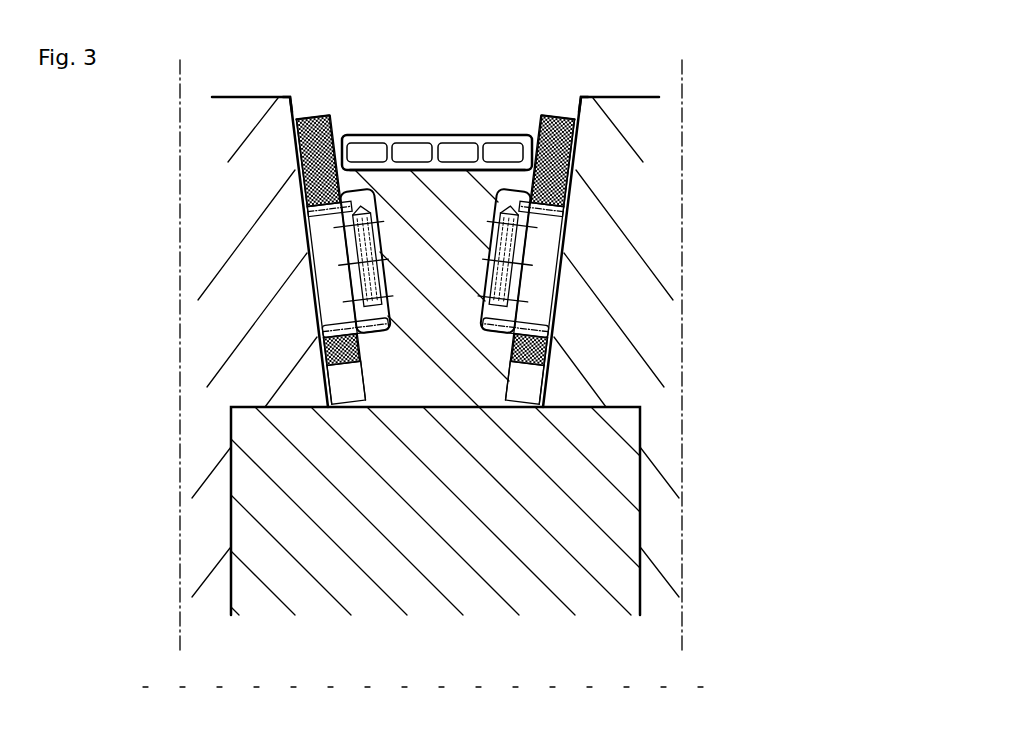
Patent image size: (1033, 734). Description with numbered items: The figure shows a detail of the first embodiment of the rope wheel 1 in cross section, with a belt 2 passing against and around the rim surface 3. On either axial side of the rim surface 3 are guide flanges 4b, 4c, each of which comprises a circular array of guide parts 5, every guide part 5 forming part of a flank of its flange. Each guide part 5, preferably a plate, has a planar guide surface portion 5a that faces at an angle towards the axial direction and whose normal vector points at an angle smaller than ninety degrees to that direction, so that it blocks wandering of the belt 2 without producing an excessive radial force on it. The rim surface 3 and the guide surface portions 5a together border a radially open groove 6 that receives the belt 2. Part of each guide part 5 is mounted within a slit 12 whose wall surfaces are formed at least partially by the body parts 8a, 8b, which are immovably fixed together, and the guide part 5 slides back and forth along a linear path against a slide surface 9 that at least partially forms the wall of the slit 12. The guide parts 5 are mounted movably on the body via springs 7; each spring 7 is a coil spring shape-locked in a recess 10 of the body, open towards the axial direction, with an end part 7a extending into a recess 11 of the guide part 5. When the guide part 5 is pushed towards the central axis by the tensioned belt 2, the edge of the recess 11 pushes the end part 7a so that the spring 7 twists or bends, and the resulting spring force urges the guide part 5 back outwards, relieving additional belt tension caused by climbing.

The rope wheel 1 is at (138, 211).
The belt 2 is at (409, 134).
The rim surface 3 is at (456, 166).
The guide flange 4b is at (269, 46).
The guide flange 4c is at (598, 46).
The guide part 5 is at (306, 102).
The guide surface portion 5a is at (332, 122).
The groove 6 is at (477, 122).
The spring 7 is at (380, 284).
The end part 7a is at (305, 213).
The body part 8a is at (434, 532).
The body part 8b is at (282, 384).
The slide surface 9 is at (293, 104).
The recess 10 is at (373, 212).
The recess 11 is at (335, 302).
The slit 12 is at (355, 388).